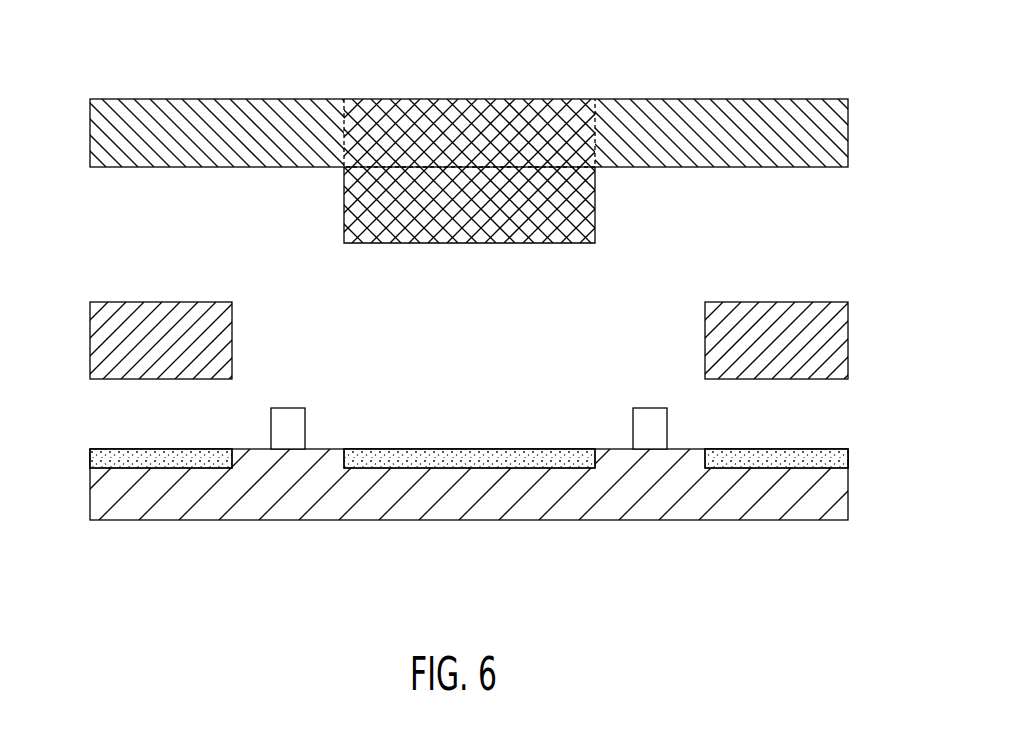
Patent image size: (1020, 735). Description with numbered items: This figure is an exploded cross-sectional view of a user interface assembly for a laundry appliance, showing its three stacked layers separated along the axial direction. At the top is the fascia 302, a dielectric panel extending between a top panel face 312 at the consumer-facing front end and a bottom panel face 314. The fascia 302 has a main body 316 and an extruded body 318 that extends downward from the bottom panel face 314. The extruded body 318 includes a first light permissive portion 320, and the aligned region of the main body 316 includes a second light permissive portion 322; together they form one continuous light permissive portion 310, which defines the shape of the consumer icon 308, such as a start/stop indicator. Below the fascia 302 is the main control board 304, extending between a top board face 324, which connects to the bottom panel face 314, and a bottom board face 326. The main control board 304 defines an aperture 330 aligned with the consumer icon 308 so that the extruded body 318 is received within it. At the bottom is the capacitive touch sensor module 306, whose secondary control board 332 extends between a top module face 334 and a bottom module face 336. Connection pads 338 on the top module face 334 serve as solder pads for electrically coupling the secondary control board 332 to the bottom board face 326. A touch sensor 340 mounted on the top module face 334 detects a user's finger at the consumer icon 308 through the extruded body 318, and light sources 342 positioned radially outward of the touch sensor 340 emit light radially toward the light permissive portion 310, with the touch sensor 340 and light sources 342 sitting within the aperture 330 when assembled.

The fascia 302 is at (103, 130).
The main control board 304 is at (105, 335).
The capacitive touch sensor module 306 is at (100, 487).
The consumer icon 308 is at (388, 99).
The light permissive portion 310 is at (535, 125).
The top panel face 312 is at (200, 99).
The bottom panel face 314 is at (240, 167).
The main body 316 is at (688, 113).
The extruded body 318 is at (458, 185).
The first light permissive portion 320 is at (578, 197).
The second light permissive portion 322 is at (355, 133).
The top board face 324 is at (765, 301).
The bottom board face 326 is at (782, 380).
The aperture 330 is at (593, 325).
The secondary control board 332 is at (500, 495).
The top module face 334 is at (330, 449).
The bottom module face 336 is at (283, 521).
The connection pad 338 is at (98, 458).
The touch sensor 340 is at (462, 458).
The light source 342 is at (287, 408).